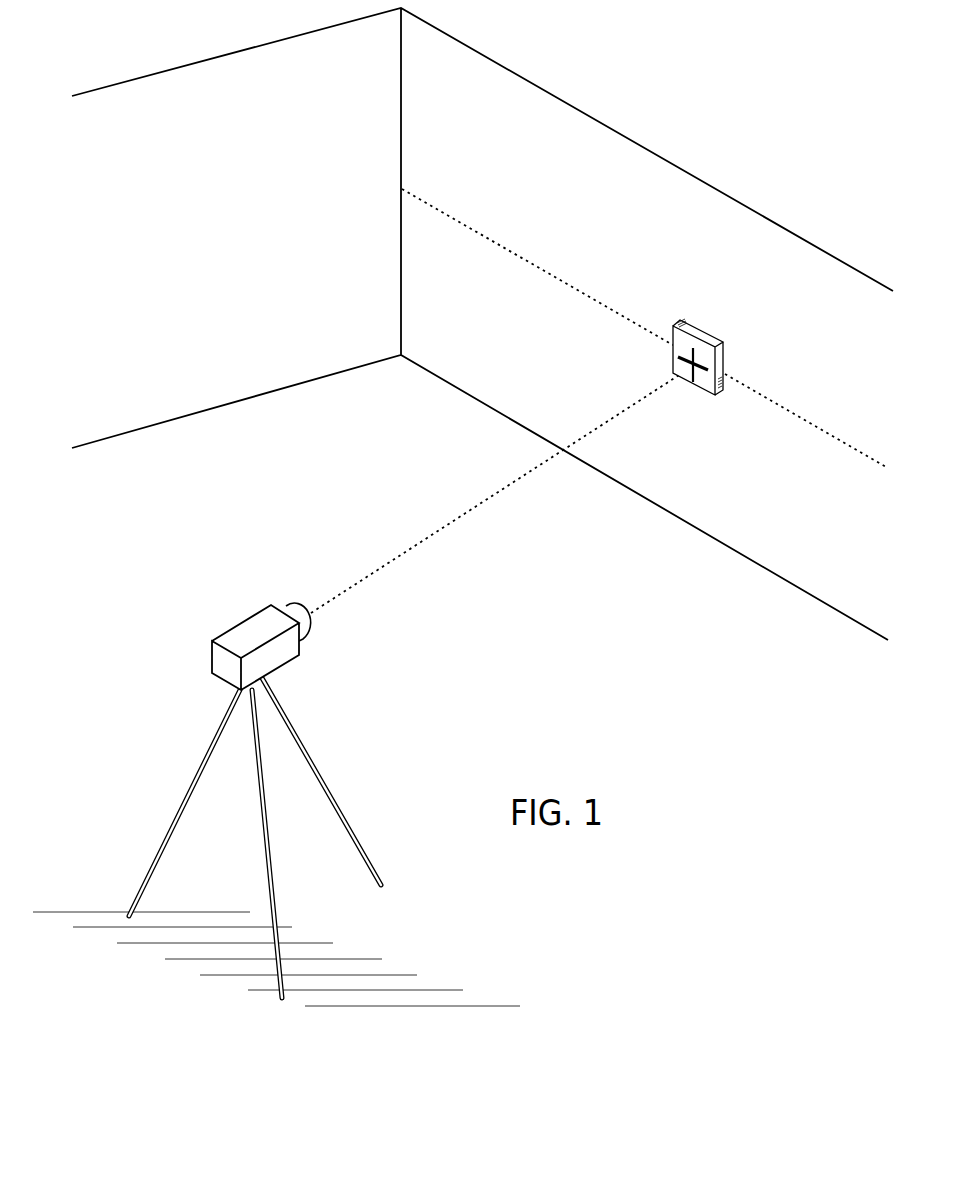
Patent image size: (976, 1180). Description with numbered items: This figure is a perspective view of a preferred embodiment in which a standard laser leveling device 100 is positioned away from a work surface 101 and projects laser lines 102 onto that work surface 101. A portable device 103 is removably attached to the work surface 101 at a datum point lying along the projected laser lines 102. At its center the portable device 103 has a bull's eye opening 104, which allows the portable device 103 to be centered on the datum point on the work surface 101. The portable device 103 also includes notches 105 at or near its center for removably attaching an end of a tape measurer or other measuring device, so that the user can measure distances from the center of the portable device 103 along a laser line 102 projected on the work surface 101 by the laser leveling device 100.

The laser leveling device 100 is at (288, 662).
The work surface 101 is at (593, 116).
The laser lines 102 is at (808, 422).
The portable device 103 is at (700, 332).
The bull's eye opening 104 is at (695, 365).
The notches 105 is at (702, 372).